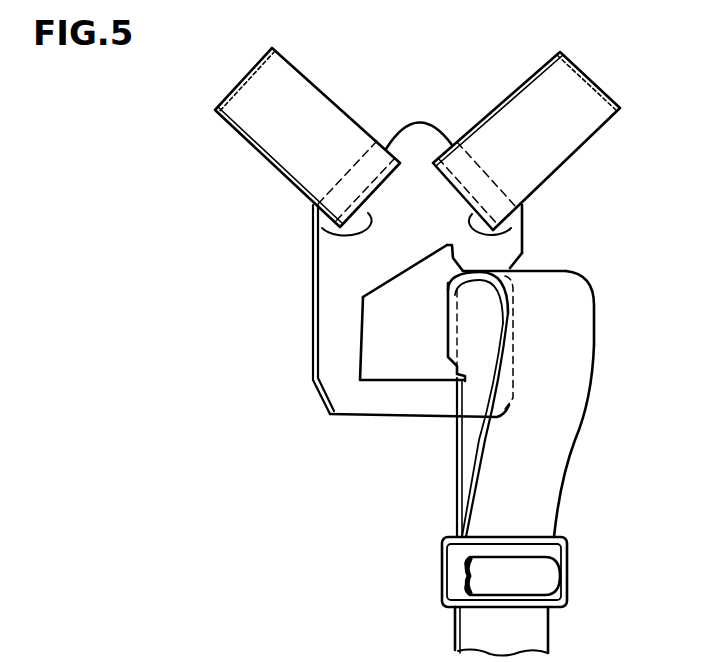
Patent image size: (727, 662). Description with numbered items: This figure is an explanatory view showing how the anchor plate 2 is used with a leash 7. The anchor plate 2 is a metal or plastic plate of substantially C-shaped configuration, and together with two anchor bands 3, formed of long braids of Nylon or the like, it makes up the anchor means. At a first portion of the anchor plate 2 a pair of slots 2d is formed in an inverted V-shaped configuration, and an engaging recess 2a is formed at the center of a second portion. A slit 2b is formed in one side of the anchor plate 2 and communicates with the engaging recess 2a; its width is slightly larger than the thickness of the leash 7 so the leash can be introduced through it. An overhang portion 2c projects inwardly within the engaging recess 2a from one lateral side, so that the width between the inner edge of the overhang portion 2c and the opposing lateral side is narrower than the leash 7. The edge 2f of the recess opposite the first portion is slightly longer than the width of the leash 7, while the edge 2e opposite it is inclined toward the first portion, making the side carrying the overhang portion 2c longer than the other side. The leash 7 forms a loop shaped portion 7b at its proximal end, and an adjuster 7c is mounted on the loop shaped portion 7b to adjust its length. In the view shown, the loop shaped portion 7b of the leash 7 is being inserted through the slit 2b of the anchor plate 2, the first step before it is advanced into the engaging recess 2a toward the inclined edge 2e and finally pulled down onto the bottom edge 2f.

The anchor plate 2 is at (437, 137).
The engaging recess 2a is at (408, 357).
The slit 2b is at (510, 267).
The overhang portion 2c is at (447, 313).
The slots 2d is at (318, 233).
The inclined edge 2e is at (377, 283).
The bottom edge 2f is at (427, 383).
The anchor bands 3 is at (310, 82).
The leash 7 is at (538, 511).
The loop shaped portion 7b is at (563, 278).
The adjuster 7c is at (452, 561).